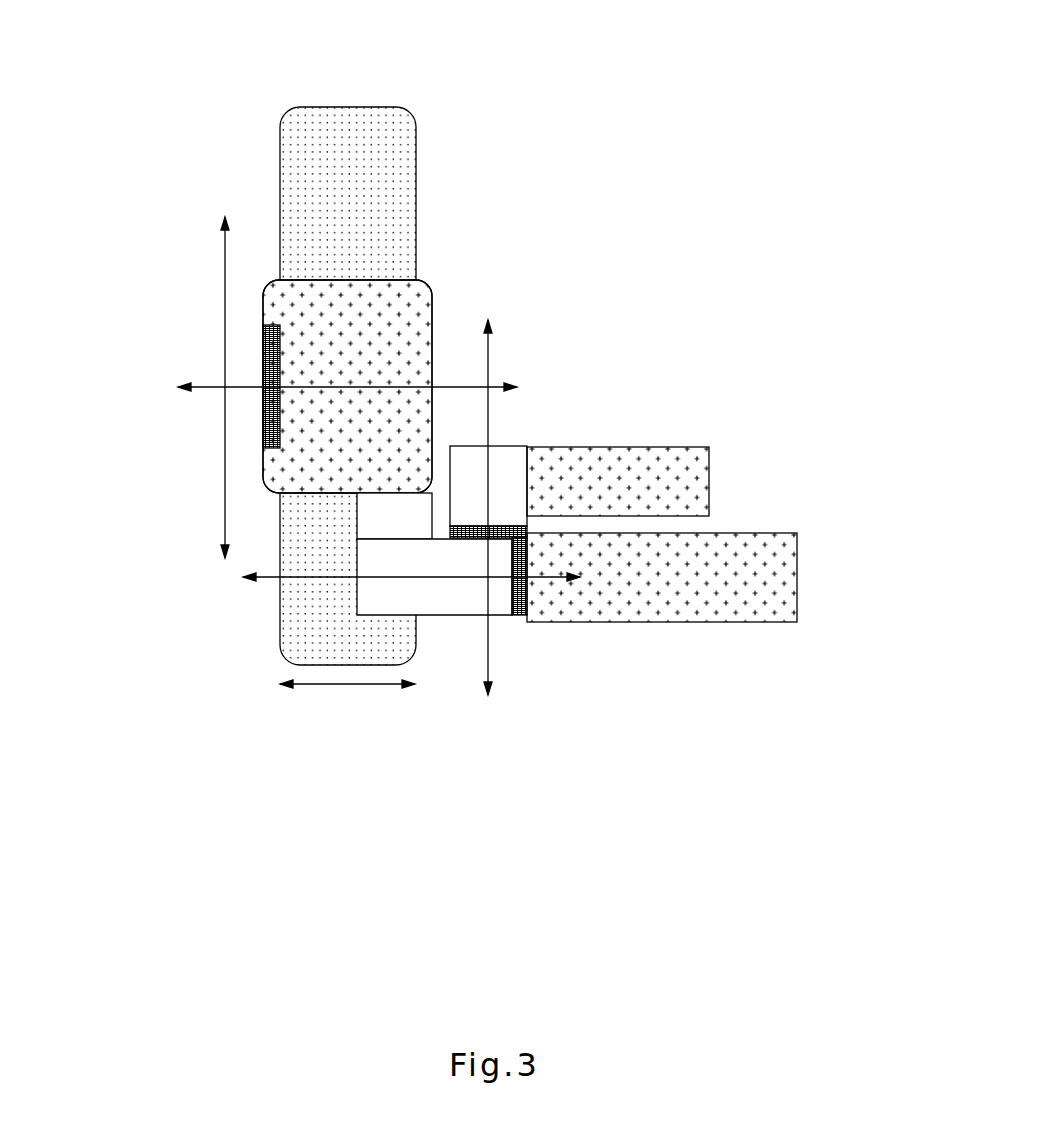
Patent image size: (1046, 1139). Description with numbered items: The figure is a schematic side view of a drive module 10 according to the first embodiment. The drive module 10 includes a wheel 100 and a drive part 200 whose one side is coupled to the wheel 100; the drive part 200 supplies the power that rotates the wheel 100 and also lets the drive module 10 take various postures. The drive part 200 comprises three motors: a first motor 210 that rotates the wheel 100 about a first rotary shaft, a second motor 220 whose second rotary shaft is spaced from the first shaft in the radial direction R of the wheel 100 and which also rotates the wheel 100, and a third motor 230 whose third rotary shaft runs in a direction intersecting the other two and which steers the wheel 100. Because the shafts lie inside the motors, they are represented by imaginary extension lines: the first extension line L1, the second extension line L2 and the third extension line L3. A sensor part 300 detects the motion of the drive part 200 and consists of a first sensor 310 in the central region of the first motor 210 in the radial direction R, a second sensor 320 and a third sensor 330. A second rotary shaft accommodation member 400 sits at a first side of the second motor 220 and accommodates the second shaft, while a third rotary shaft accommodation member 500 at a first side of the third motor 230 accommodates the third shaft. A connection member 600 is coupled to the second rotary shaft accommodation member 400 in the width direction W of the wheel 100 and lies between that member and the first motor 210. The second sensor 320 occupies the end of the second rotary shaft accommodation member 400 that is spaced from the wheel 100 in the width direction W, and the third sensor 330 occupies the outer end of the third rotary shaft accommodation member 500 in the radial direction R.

The drive module 10 is at (213, 47).
The wheel 100 is at (358, 88).
The drive part 200 is at (545, 836).
The first motor 210 is at (403, 304).
The second motor 220 is at (757, 577).
The third motor 230 is at (670, 480).
The sensor part 300 is at (738, 836).
The first sensor 310 is at (268, 343).
The second sensor 320 is at (518, 617).
The third sensor 330 is at (470, 530).
The second rotary shaft accommodation member 400 is at (377, 597).
The third rotary shaft accommodation member 500 is at (507, 467).
The connection member 600 is at (373, 517).
The first extension line L1 is at (203, 385).
The second extension line L2 is at (267, 578).
The third extension line L3 is at (482, 667).
The radial direction R is at (225, 447).
The width direction W is at (347, 686).